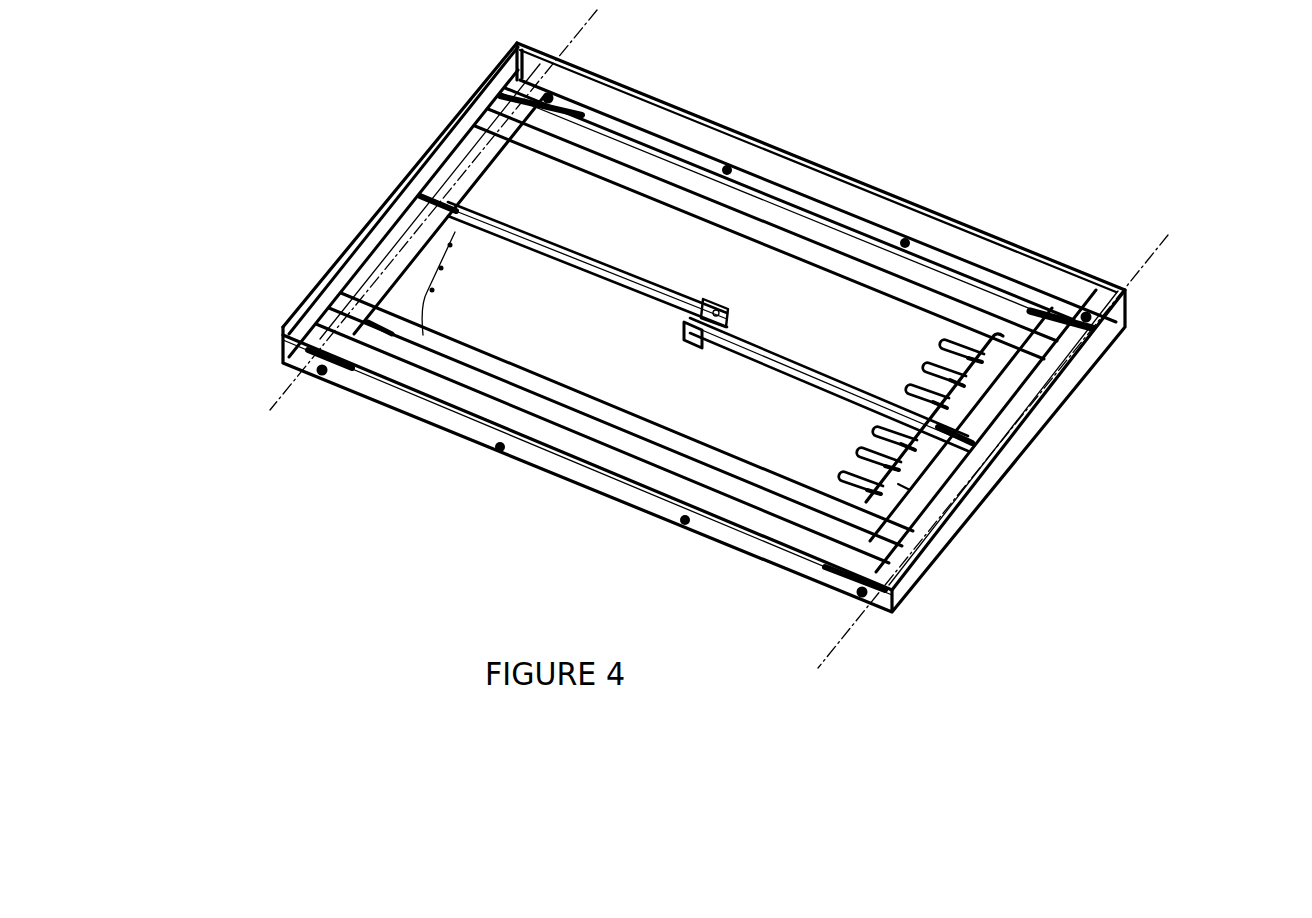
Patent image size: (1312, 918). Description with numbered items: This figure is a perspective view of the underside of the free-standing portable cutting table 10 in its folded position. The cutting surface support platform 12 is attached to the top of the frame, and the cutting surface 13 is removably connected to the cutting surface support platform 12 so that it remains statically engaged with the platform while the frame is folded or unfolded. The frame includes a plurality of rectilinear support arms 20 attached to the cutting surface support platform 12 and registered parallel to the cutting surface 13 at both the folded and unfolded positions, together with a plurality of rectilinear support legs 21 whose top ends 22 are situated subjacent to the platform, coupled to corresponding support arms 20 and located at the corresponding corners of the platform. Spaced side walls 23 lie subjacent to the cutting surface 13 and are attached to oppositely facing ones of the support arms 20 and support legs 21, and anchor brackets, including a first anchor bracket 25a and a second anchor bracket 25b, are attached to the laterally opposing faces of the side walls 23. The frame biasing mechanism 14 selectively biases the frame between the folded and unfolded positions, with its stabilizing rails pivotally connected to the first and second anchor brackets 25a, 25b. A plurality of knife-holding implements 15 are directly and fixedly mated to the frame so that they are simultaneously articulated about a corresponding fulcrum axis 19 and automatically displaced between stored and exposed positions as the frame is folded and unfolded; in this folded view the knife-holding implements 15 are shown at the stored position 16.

The portable cutting table 10 is at (1062, 183).
The cutting surface support platform 12 is at (647, 120).
The cutting surface 13 is at (777, 150).
The frame biasing mechanism 14 is at (648, 334).
The knife-holding implements 15 is at (962, 390).
The stored position 16 is at (920, 405).
The fulcrum axis 19 is at (275, 398).
The rectilinear support arms 20 is at (362, 300).
The rectilinear support legs 21 is at (950, 290).
The top ends 22 is at (545, 120).
The side walls 23 is at (378, 330).
The first anchor bracket 25a is at (420, 200).
The second anchor bracket 25b is at (955, 450).